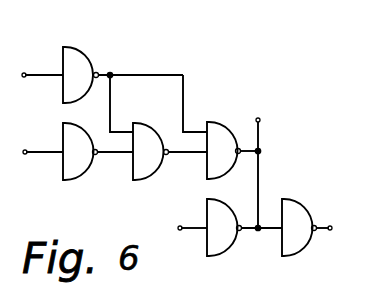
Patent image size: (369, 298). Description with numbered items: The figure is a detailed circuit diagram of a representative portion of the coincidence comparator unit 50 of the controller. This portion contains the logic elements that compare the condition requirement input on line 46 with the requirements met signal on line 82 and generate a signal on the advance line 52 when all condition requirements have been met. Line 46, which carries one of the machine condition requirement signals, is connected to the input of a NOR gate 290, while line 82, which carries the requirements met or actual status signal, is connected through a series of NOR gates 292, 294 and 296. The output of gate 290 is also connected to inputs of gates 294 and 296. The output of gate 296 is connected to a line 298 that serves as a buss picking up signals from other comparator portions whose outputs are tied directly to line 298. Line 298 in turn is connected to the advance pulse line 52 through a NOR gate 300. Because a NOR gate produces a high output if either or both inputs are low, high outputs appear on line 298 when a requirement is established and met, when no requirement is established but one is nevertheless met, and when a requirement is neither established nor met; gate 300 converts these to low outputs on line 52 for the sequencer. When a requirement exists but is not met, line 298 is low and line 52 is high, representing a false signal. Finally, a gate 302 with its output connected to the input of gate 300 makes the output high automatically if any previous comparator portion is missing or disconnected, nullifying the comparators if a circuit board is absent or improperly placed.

The line 46 is at (38, 75).
The coincidence comparator unit 50 is at (200, 78).
The advance line 52 is at (331, 231).
The line 82 is at (41, 152).
The NOR gate 290 is at (72, 62).
The NOR gate 292 is at (68, 163).
The NOR gate 294 is at (140, 170).
The NOR gate 296 is at (217, 130).
The line 298 is at (258, 137).
The NOR gate 300 is at (300, 215).
The gate 302 is at (222, 240).